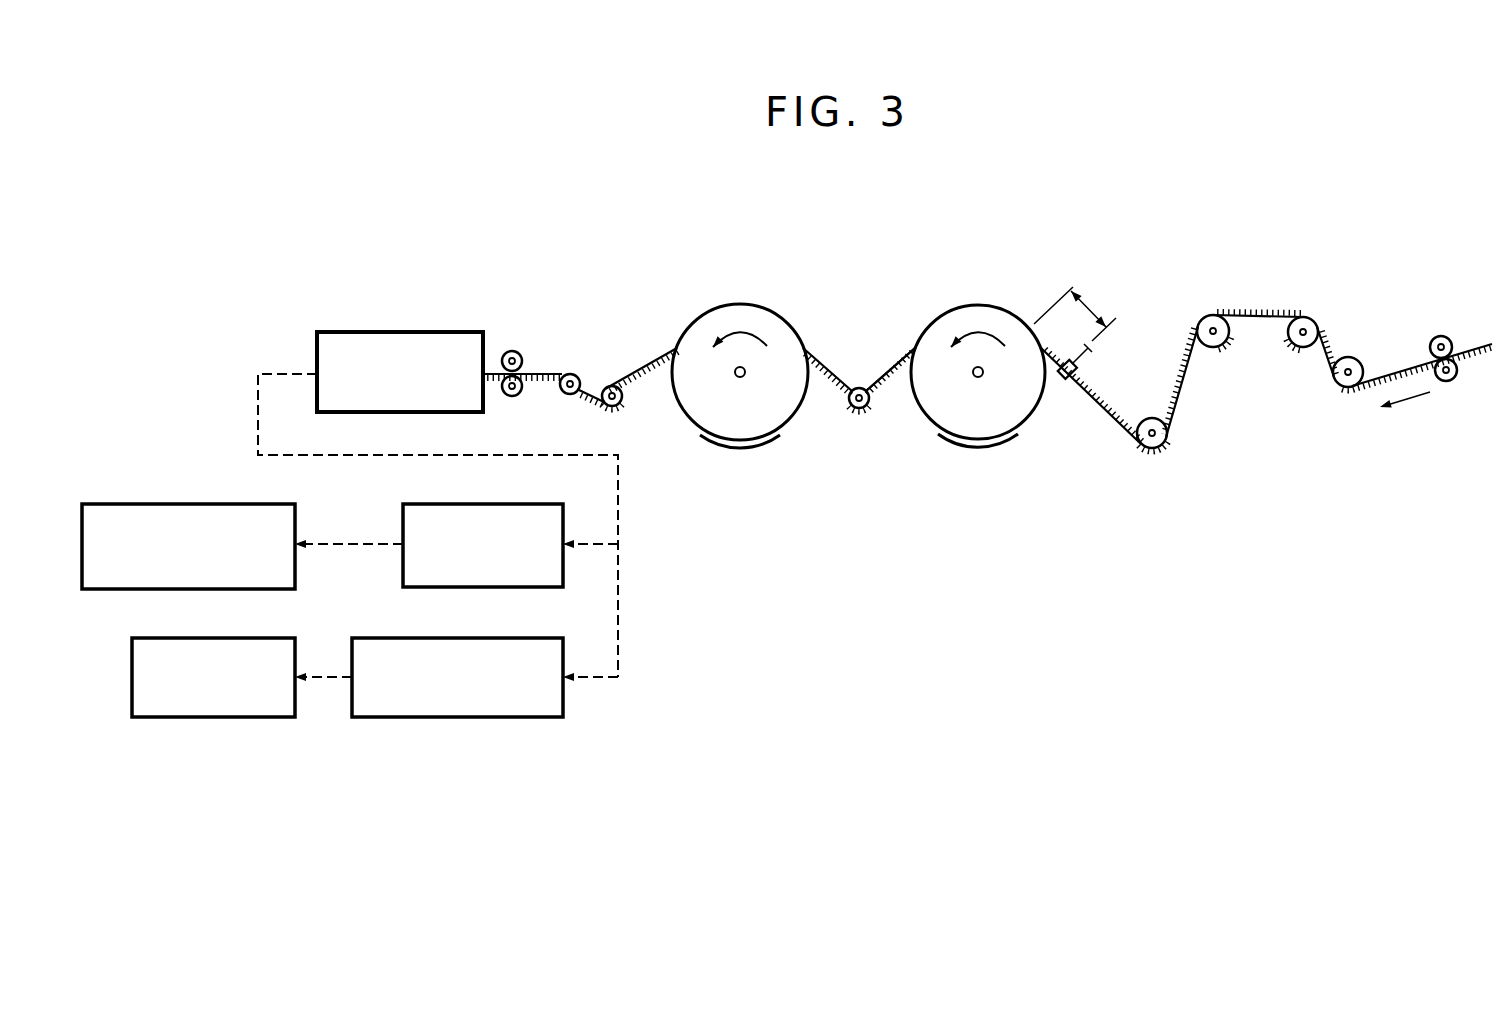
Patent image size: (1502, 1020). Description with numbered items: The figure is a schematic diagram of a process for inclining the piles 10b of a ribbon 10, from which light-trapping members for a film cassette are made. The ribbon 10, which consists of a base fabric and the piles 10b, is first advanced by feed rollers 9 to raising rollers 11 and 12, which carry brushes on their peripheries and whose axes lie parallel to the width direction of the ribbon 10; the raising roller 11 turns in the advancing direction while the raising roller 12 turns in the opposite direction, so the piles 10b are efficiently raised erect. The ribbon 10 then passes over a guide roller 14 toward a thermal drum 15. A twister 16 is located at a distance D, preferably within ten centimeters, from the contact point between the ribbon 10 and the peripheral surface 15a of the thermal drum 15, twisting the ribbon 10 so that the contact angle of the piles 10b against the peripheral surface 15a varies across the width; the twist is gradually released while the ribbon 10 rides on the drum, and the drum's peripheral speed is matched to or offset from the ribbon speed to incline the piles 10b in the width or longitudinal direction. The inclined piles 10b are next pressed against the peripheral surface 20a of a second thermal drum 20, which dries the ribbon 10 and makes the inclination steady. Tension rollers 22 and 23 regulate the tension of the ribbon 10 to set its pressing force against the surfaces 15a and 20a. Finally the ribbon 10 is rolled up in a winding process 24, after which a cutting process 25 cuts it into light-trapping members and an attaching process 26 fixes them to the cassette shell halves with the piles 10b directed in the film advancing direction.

The feed rollers 9 is at (1447, 383).
The ribbon 10 is at (1470, 338).
The piles 10b is at (892, 400).
The raising roller 11 is at (1302, 349).
The raising roller 12 is at (1213, 349).
The guide roller 14 is at (1152, 417).
The thermal drum 15 is at (984, 293).
The peripheral surface 15a is at (983, 440).
The twister 16 is at (1058, 392).
The distance D is at (1090, 310).
The thermal drum 20 is at (740, 291).
The peripheral surface 20a is at (740, 441).
The tension roller 22 is at (859, 387).
The tension roller 23 is at (612, 385).
The winding process 24 is at (405, 338).
The cutting process 25 is at (400, 563).
The attaching process 26 is at (172, 503).